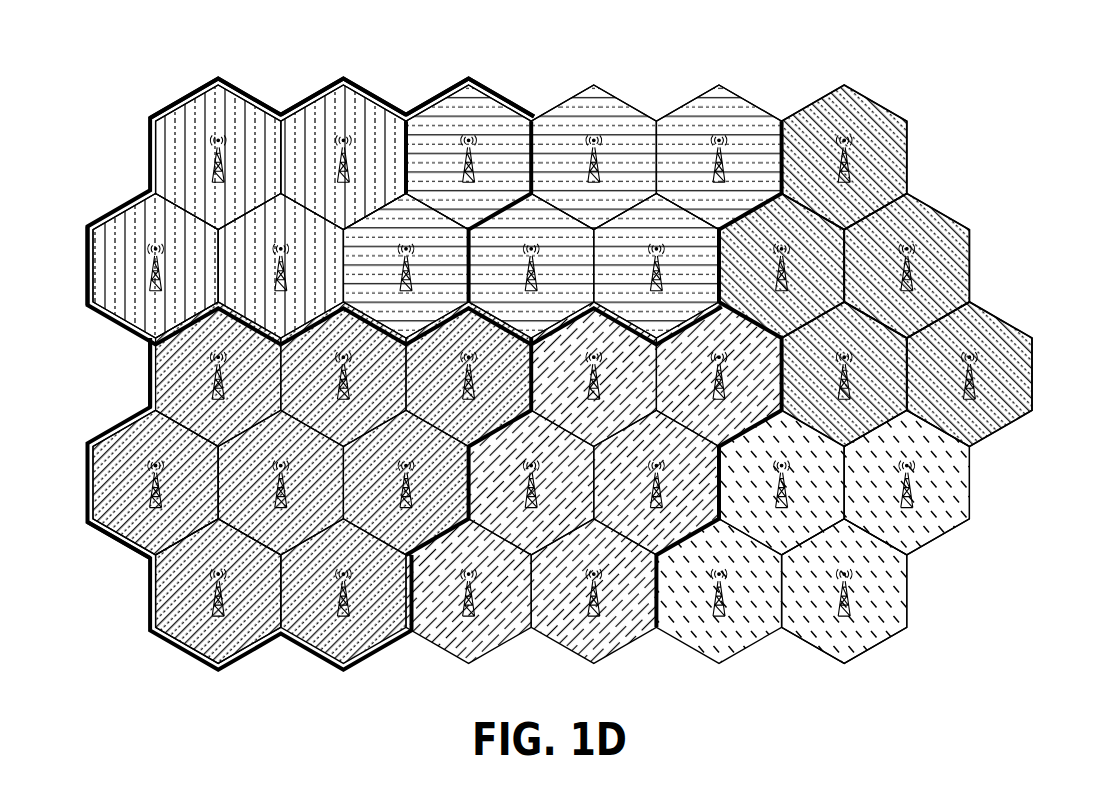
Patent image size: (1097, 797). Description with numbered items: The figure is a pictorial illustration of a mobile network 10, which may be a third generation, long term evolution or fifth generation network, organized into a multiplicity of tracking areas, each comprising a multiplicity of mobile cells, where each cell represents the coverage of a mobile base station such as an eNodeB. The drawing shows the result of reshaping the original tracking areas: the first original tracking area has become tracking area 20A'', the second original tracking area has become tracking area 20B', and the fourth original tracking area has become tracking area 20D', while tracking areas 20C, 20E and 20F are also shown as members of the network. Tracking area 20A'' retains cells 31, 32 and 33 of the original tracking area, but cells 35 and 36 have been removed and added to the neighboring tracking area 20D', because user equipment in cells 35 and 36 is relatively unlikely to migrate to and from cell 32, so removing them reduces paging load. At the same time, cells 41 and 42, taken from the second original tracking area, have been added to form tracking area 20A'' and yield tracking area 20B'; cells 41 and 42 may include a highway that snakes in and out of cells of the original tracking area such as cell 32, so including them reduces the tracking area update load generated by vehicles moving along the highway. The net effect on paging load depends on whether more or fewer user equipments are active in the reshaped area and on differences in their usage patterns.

The mobile network 10 is at (990, 88).
The tracking area 20A'' is at (390, 212).
The tracking area 20B' is at (562, 188).
The tracking area 20C is at (990, 280).
The tracking area 20D' is at (310, 513).
The tracking area 20E is at (638, 663).
The tracking area 20F is at (937, 579).
The cell 31 is at (178, 103).
The cell 32 is at (367, 100).
The cell 33 is at (88, 273).
The cell 35 is at (160, 397).
The cell 36 is at (138, 532).
The cell 41 is at (477, 113).
The cell 42 is at (428, 230).